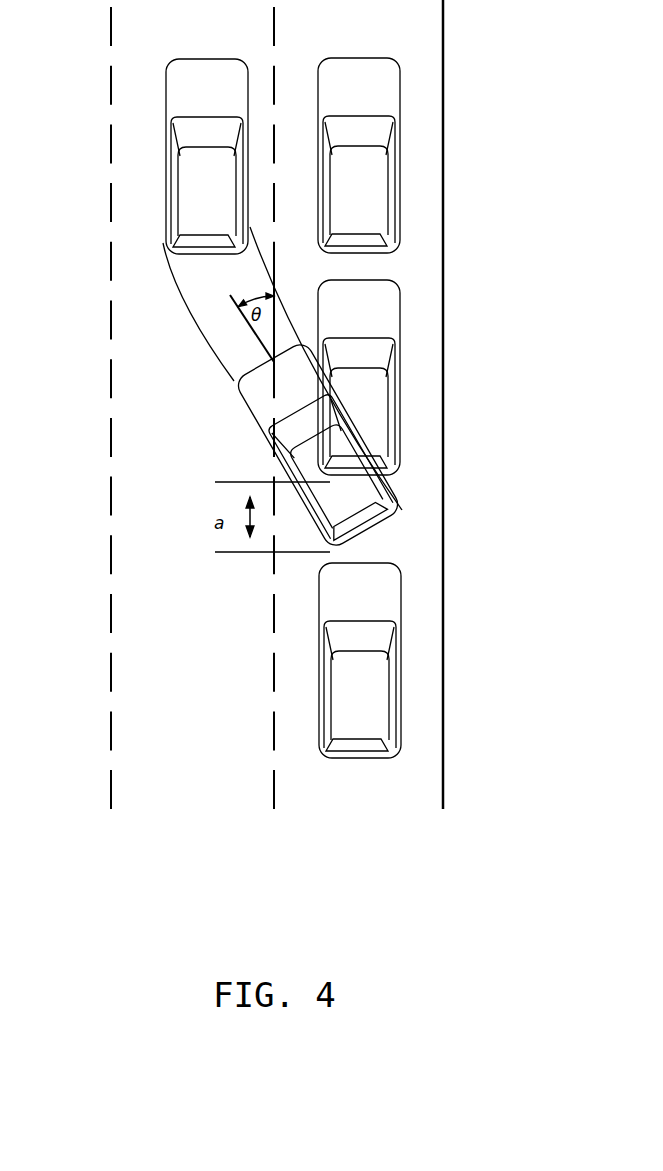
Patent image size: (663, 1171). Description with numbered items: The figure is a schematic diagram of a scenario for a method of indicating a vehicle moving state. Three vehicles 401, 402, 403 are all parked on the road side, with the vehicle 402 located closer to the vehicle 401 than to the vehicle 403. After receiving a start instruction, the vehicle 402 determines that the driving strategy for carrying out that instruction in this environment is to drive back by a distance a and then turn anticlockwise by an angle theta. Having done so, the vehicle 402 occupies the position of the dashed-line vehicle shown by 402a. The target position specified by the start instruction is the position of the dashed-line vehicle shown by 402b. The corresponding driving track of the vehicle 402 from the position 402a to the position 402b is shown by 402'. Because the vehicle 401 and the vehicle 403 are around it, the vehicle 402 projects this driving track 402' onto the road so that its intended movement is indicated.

The vehicle 401 is at (385, 88).
The vehicle 402 is at (421, 354).
The dashed-line vehicle position 402a is at (385, 494).
The dashed-line vehicle target position 402b is at (180, 88).
The driving track 402' is at (271, 368).
The vehicle 403 is at (385, 593).